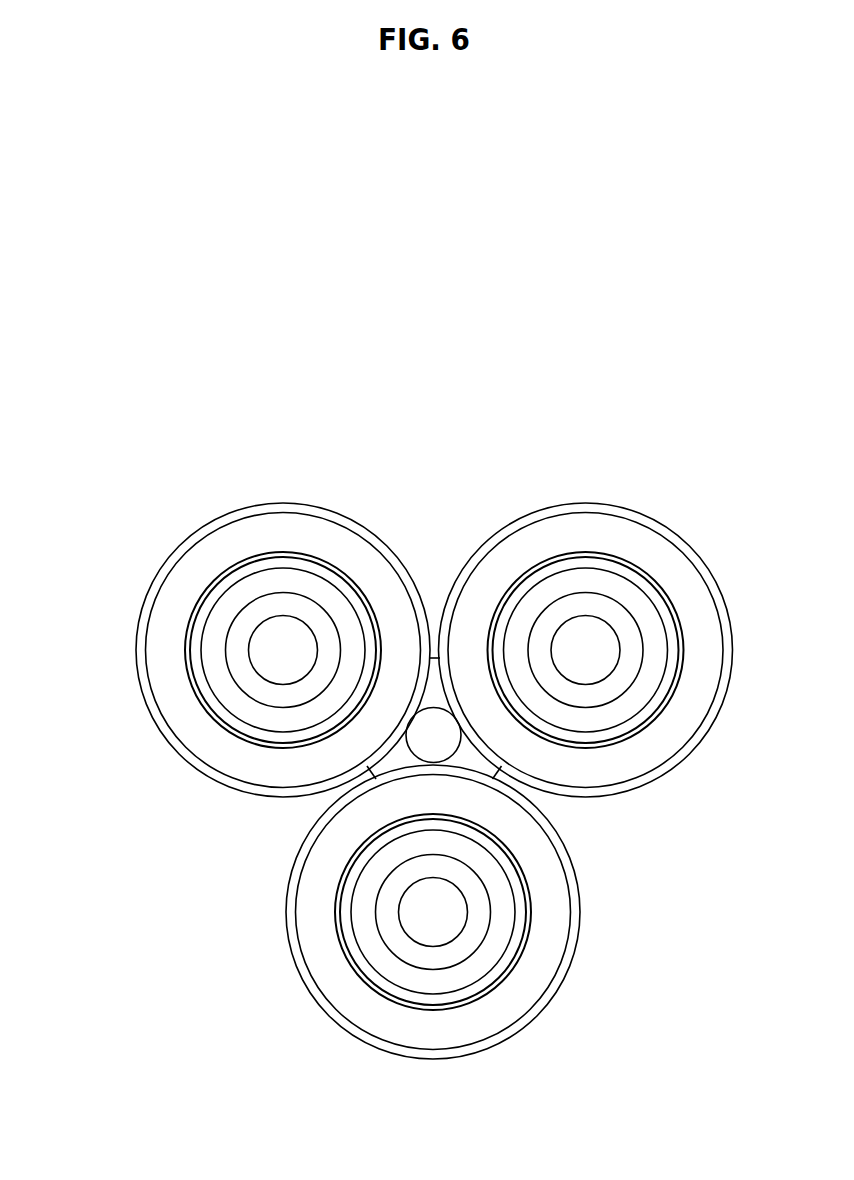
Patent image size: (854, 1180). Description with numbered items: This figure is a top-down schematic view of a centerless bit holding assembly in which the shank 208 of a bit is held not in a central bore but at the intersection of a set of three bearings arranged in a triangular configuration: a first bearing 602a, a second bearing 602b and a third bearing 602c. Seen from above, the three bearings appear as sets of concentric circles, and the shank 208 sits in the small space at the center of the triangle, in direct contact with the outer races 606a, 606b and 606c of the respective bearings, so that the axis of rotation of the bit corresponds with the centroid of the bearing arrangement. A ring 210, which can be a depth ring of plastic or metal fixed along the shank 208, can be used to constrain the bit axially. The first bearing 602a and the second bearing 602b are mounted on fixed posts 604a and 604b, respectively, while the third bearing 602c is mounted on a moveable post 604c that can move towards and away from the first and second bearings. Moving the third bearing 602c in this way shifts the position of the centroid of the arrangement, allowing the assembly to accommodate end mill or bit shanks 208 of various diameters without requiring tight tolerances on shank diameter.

The shank 208 is at (433, 735).
The ring 210 is at (388, 762).
The first bearing 602a is at (240, 538).
The second bearing 602b is at (563, 532).
The third bearing 602c is at (470, 1020).
The fixed post 604a is at (270, 649).
The fixed post 604b is at (612, 649).
The moveable post 604c is at (447, 923).
The outer race 606a is at (306, 503).
The outer race 606b is at (612, 503).
The outer race 606c is at (335, 1024).